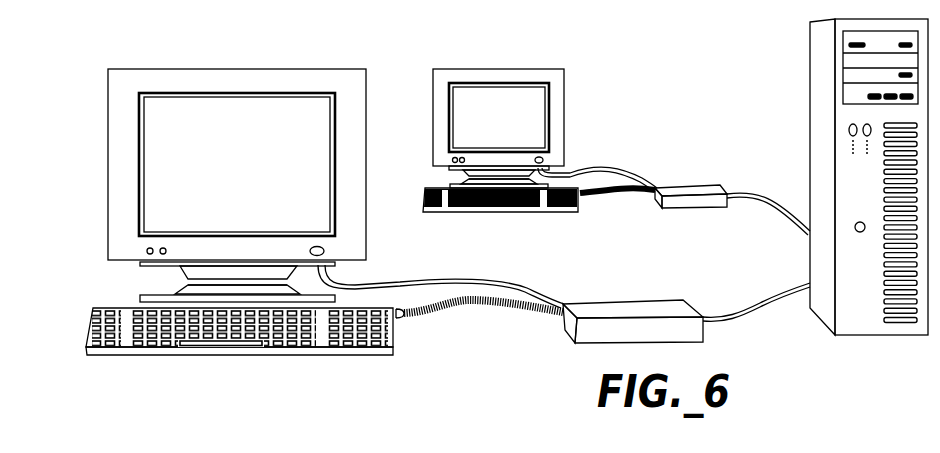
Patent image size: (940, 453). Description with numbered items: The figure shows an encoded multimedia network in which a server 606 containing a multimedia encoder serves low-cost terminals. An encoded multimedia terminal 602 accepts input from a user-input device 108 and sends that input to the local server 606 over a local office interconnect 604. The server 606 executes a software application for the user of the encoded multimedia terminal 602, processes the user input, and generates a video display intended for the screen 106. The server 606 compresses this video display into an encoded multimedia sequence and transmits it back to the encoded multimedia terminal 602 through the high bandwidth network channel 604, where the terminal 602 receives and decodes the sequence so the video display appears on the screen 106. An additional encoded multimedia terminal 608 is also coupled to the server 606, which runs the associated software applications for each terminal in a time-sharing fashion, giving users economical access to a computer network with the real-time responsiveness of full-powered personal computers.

The screen 106 is at (108, 105).
The user-input device 108 is at (128, 308).
The encoded multimedia terminal 602 is at (660, 300).
The local office interconnect 604 is at (780, 289).
The server 606 is at (809, 100).
The additional encoded multimedia terminal 608 is at (707, 185).